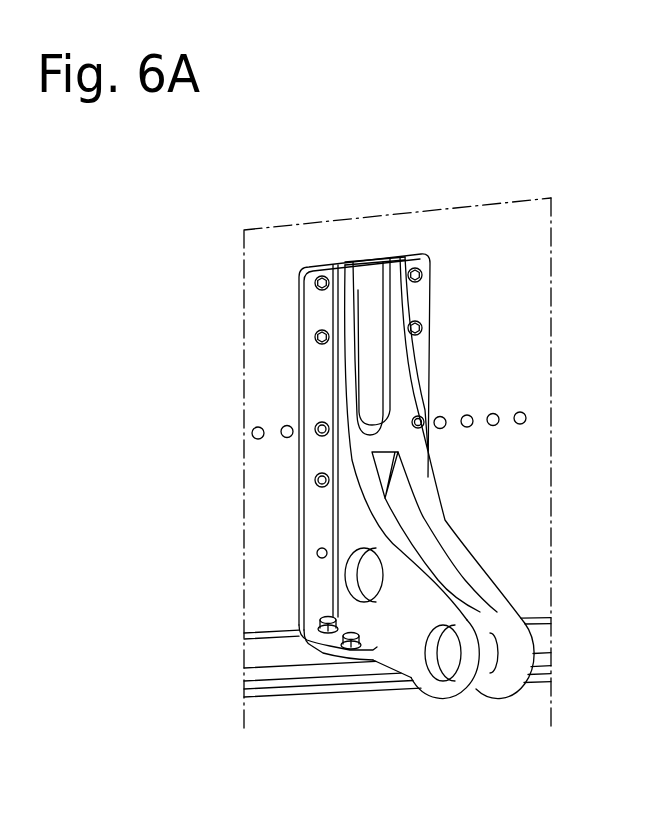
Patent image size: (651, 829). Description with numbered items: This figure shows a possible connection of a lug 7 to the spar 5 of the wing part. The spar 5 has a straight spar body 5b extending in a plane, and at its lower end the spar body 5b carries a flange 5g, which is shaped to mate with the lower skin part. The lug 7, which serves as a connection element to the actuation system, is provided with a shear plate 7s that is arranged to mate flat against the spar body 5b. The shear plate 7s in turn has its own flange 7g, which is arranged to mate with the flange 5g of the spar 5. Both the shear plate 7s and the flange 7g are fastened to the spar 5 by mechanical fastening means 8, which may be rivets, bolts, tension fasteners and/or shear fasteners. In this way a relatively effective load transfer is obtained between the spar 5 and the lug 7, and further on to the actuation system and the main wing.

The spar 5 is at (493, 367).
The spar body 5b is at (490, 492).
The flange 5g is at (267, 658).
The lug 7 is at (483, 612).
The shear plate 7s is at (317, 303).
The flange 7g is at (302, 645).
The mechanical fastening means 8 is at (322, 337).